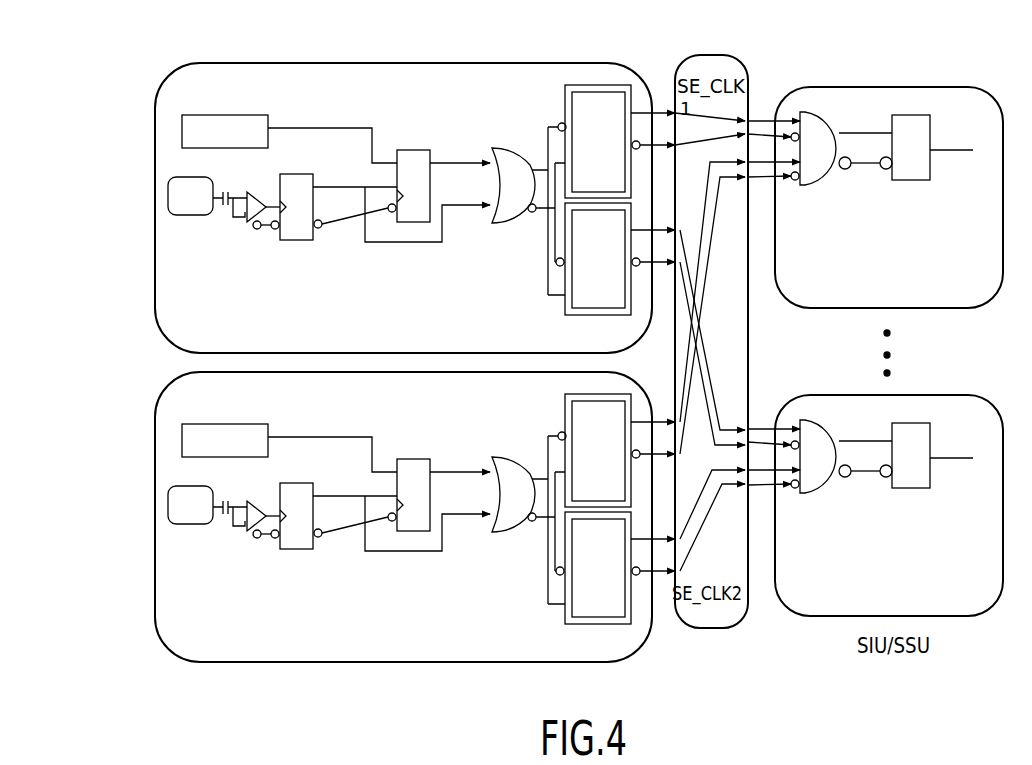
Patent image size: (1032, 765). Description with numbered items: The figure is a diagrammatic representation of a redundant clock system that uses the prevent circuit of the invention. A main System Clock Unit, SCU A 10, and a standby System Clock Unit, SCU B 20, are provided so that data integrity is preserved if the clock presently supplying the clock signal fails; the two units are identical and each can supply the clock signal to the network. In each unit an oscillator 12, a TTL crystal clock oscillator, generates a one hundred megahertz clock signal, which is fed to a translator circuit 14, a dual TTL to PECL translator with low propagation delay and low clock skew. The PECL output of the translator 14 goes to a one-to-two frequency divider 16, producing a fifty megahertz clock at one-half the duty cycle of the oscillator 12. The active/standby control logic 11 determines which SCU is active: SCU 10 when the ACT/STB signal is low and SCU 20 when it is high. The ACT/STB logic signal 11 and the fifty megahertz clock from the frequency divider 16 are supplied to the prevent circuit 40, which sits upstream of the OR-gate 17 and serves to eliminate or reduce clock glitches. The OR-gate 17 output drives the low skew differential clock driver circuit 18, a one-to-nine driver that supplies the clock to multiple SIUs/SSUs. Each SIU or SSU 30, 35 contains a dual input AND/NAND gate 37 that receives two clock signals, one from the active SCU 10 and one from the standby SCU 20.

The main System Clock Unit (SCU A) 10 is at (168, 78).
The standby System Clock Unit (SCU B) 20 is at (395, 502).
The active/standby (ACT/STB) control logic 11 is at (205, 115).
The oscillator 12 is at (168, 210).
The translator circuit 14 is at (255, 228).
The 1:2 frequency divider 16 is at (300, 174).
The OR-gate 17 is at (507, 225).
The differential clock driver circuit 18 is at (565, 94).
The prevent circuit 40 is at (415, 150).
The System Interface Unit / System Switch Unit (SIU/SSU) 30 is at (938, 87).
The System Interface Unit / System Switch Unit (SIU/SSU) 35 is at (889, 487).
The dual input AND/NAND gate 37 is at (825, 112).